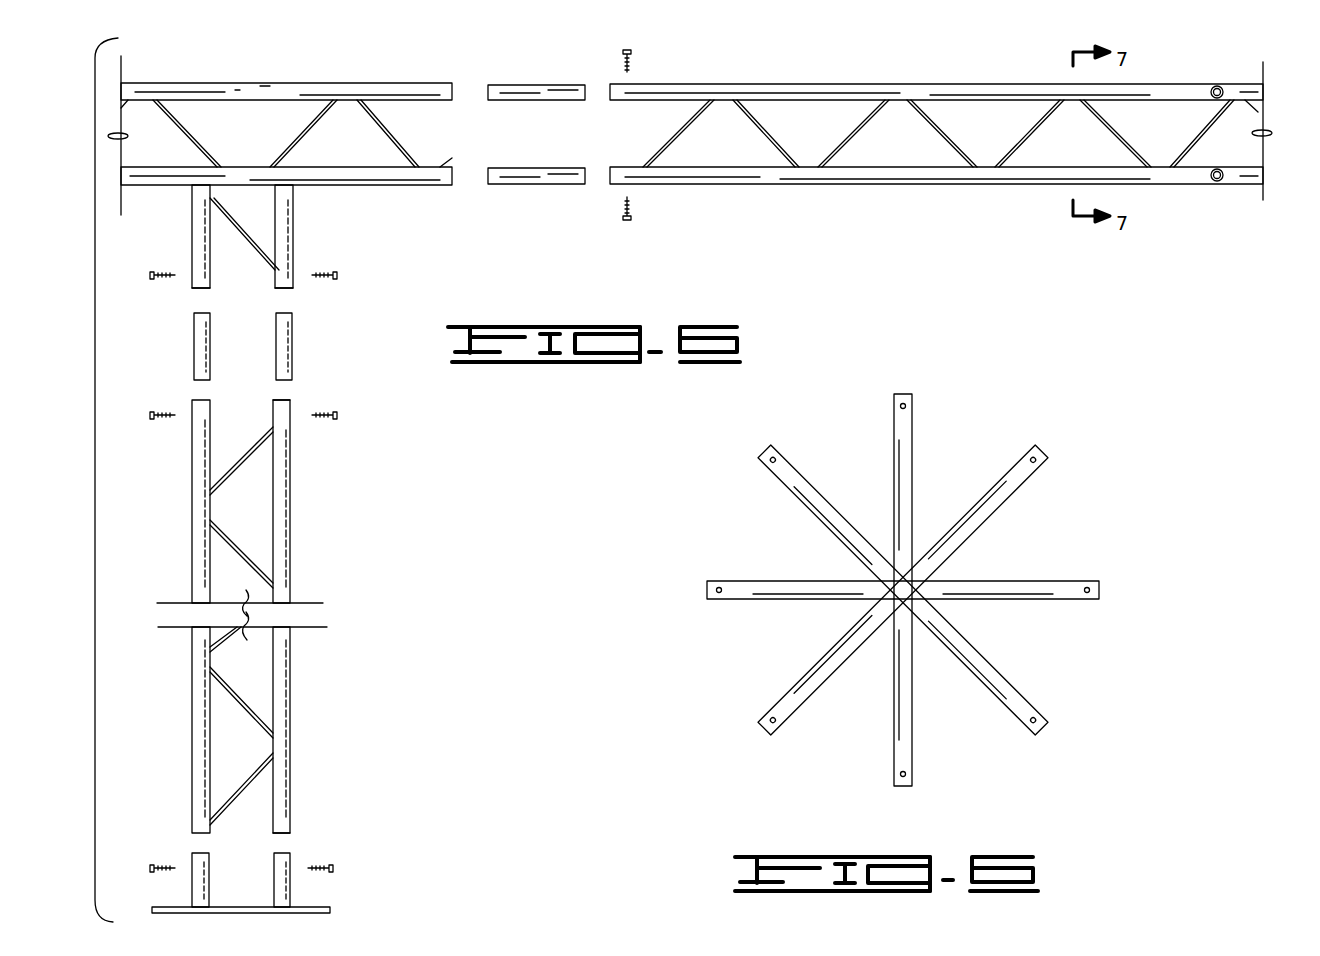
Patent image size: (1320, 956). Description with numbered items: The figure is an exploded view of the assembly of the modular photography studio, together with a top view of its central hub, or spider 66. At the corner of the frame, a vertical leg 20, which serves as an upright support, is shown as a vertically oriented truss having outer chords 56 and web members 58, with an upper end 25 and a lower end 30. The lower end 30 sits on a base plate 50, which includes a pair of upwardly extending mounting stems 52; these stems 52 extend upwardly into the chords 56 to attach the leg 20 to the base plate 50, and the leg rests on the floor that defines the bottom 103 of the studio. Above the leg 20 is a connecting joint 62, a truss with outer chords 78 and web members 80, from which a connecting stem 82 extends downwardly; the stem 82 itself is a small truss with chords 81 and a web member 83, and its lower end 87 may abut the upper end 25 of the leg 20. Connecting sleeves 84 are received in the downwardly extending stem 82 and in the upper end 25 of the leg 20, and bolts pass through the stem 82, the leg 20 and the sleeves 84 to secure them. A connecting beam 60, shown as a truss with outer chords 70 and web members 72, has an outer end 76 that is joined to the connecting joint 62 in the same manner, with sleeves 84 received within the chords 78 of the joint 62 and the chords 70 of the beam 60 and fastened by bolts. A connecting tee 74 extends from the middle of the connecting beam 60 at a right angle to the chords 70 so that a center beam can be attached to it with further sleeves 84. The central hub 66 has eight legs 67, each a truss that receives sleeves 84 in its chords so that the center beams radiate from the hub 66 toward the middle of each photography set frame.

In FIG. 6, the vertical leg 20 is at (276, 483).
In FIG. 6, the upper end 25 is at (285, 400).
In FIG. 6, the lower end 30 is at (283, 835).
In FIG. 6, the base plate 50 is at (313, 908).
In FIG. 6, the mounting stem 52 is at (290, 862).
In FIG. 6, the outer chord 56 is at (232, 731).
In FIG. 6, the web member 58 is at (258, 712).
In FIG. 6, the connecting beam 60 is at (941, 136).
In FIG. 6, the connecting joint 62 is at (286, 142).
In FIG. 5, the central hub 66 is at (905, 588).
In FIG. 5, the leg of hub 67 is at (815, 478).
In FIG. 6, the outer chord 70 is at (936, 136).
In FIG. 6, the web member 72 is at (945, 140).
In FIG. 6, the connecting tee 74 is at (1213, 88).
In FIG. 6, the outer end 76 is at (608, 85).
In FIG. 6, the outer chord 78 is at (365, 83).
In FIG. 6, the web member 80 is at (395, 140).
In FIG. 6, the chord 81 is at (233, 254).
In FIG. 6, the connecting stem 82 is at (192, 285).
In FIG. 6, the web member 83 is at (227, 222).
In FIG. 6, the connecting sleeve 84 is at (292, 340).
In FIG. 6, the lower end 87 is at (283, 288).
In FIG. 6, the bottom 103 is at (833, 83).